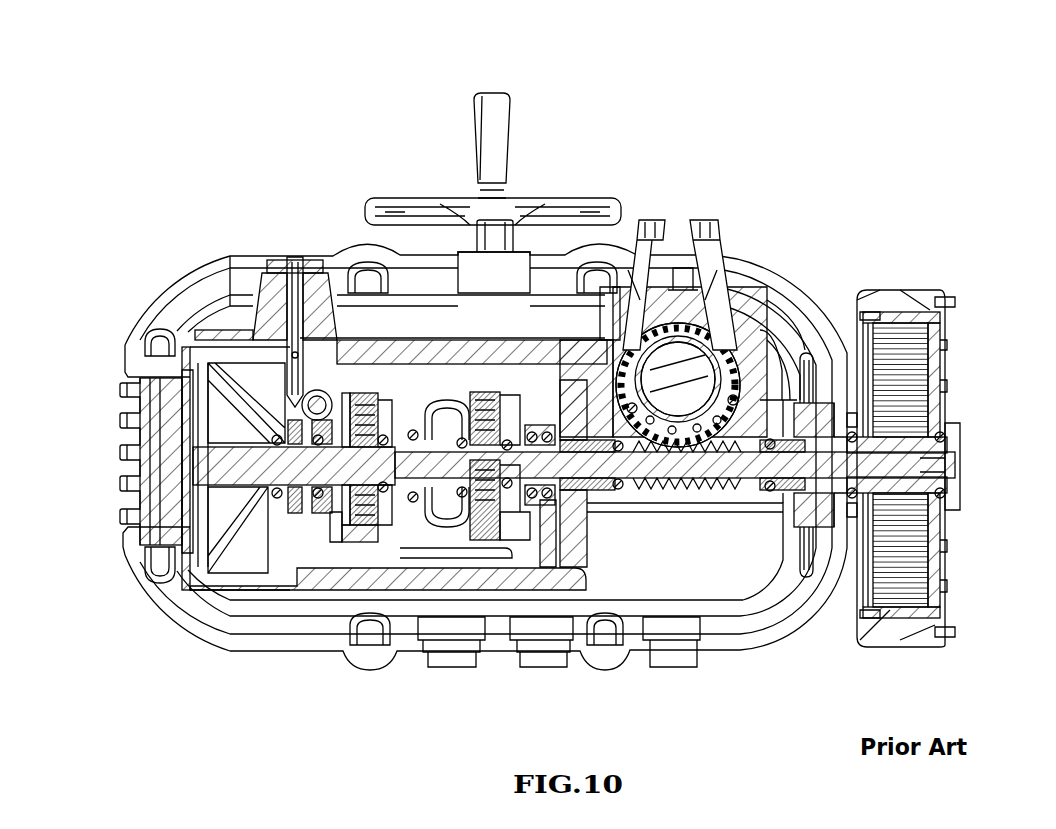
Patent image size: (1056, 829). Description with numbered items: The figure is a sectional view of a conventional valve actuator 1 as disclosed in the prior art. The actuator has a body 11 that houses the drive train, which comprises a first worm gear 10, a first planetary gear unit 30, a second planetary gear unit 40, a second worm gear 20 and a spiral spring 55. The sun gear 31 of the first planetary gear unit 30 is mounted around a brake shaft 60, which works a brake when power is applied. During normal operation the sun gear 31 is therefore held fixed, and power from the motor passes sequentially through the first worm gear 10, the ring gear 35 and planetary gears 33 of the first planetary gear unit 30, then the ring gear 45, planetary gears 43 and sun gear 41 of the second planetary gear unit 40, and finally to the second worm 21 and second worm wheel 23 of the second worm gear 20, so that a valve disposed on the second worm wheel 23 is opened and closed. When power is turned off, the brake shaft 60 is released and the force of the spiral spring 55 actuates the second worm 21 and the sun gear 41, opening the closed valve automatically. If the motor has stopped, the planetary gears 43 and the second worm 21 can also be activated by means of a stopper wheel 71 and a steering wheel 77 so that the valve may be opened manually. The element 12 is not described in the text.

The valve actuator 1 is at (832, 136).
The first worm gear 10 is at (72, 448).
The body 11 is at (200, 409).
The sprocket hub 12 is at (200, 433).
The second worm gear 20 is at (837, 247).
The second worm 21 is at (821, 342).
The second worm wheel 23 is at (740, 395).
The first planetary gear unit 30 is at (385, 520).
The sun gear 31 is at (388, 590).
The planetary gears 33 is at (372, 545).
The ring gear 35 is at (345, 585).
The second planetary gear unit 40 is at (520, 538).
The sun gear 41 is at (515, 500).
The planetary gears 43 is at (513, 413).
The ring gear 45 is at (487, 390).
The spiral spring 55 is at (920, 586).
The brake shaft 60 is at (200, 467).
The stopper wheel 71 is at (232, 540).
The steering wheel 77 is at (428, 200).